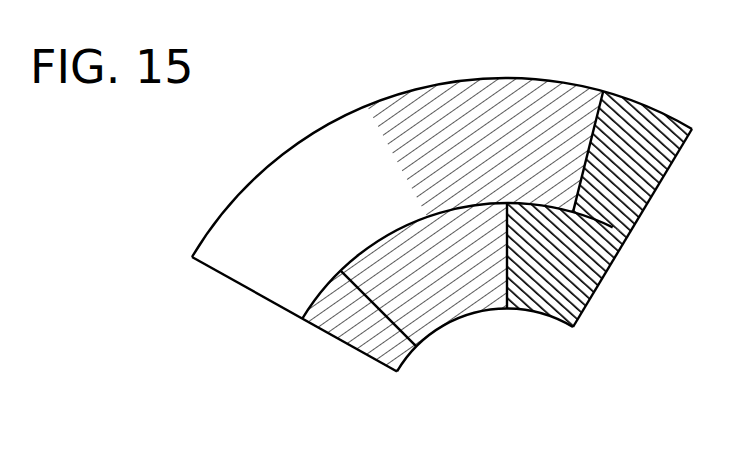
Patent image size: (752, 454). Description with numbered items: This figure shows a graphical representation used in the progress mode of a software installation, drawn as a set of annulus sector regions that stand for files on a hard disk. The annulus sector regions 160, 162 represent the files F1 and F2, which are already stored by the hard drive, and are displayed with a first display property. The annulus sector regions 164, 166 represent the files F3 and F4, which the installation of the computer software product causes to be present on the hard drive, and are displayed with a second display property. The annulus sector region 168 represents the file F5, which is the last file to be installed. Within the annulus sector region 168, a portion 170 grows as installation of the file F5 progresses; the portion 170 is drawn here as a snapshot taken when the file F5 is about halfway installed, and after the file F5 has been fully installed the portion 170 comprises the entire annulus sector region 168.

The annulus sector region 160 is at (604, 278).
The annulus sector region 162 is at (655, 110).
The annulus sector region 164 is at (457, 324).
The annulus sector region 166 is at (411, 355).
The annulus sector region 168 is at (220, 217).
The portion of the annulus sector region 170 is at (528, 79).